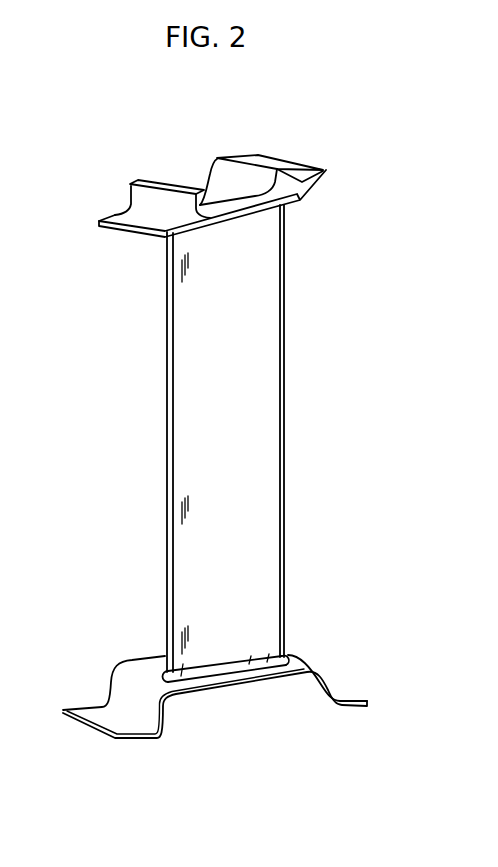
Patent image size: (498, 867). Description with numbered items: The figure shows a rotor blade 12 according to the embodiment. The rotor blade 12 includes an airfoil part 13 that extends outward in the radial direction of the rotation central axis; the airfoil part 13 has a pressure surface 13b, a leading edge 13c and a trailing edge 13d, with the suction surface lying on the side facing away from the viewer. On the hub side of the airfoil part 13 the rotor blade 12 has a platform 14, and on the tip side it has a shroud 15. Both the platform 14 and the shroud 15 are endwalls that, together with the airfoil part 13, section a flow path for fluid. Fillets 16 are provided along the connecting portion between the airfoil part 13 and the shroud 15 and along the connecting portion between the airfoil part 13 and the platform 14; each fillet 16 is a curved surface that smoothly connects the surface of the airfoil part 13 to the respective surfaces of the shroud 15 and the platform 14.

The rotor blade 12 is at (112, 266).
The airfoil part 13 is at (256, 347).
The pressure surface 13b is at (246, 437).
The leading edge 13c is at (167, 498).
The trailing edge 13d is at (284, 537).
The platform 14 is at (225, 670).
The shroud 15 is at (242, 213).
The fillet 16 is at (240, 662).